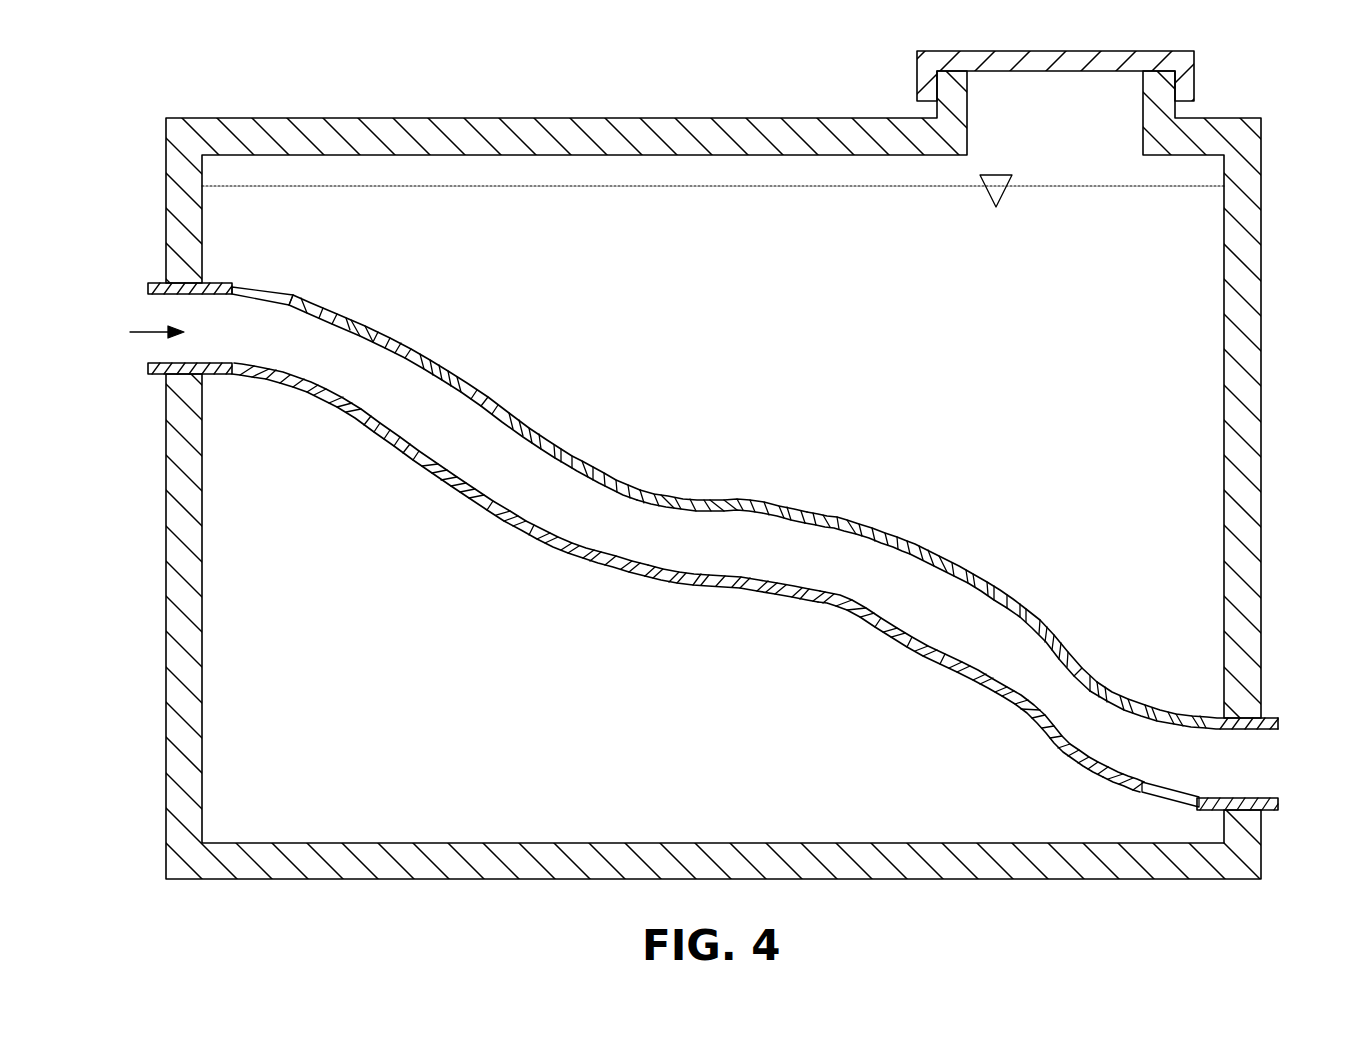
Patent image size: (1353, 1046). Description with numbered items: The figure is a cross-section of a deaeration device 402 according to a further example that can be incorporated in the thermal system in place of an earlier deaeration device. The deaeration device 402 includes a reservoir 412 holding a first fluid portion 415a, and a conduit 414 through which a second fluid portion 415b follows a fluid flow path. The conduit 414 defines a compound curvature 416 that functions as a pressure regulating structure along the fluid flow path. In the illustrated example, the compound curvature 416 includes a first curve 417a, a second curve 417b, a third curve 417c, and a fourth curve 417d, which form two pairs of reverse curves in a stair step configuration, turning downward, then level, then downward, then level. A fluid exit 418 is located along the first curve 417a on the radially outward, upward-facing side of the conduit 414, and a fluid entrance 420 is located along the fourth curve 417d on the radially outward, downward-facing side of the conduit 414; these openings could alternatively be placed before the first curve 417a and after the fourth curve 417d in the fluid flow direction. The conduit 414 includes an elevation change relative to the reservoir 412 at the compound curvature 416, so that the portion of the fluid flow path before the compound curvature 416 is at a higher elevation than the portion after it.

The deaeration device 402 is at (676, 469).
The reservoir 412 is at (560, 103).
The conduit 414 is at (1268, 718).
The first fluid portion 415a is at (713, 211).
The second fluid portion 415b is at (131, 333).
The compound curvature 416 is at (739, 558).
The first curve 417a is at (323, 307).
The second curve 417b is at (647, 492).
The third curve 417c is at (890, 541).
The fourth curve 417d is at (1210, 744).
The fluid exit 418 is at (287, 301).
The fluid entrance 420 is at (1168, 796).